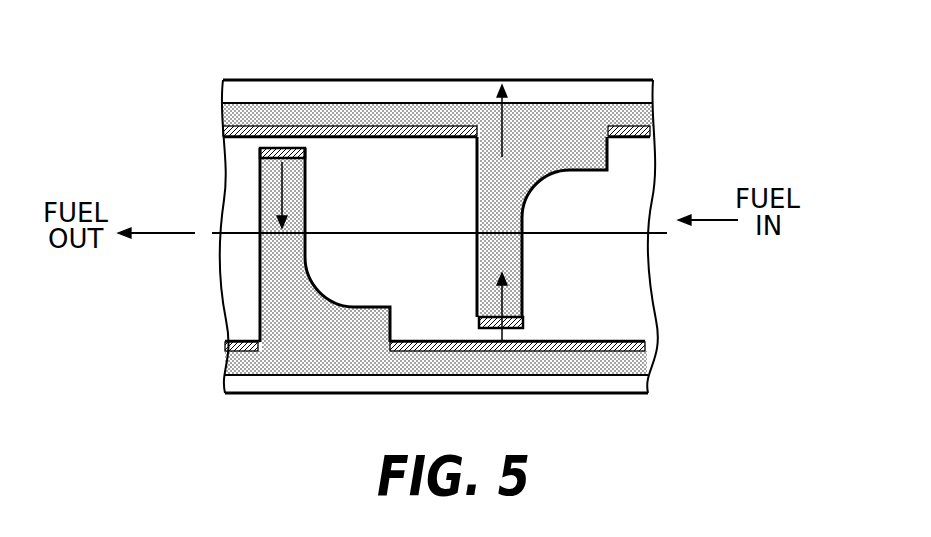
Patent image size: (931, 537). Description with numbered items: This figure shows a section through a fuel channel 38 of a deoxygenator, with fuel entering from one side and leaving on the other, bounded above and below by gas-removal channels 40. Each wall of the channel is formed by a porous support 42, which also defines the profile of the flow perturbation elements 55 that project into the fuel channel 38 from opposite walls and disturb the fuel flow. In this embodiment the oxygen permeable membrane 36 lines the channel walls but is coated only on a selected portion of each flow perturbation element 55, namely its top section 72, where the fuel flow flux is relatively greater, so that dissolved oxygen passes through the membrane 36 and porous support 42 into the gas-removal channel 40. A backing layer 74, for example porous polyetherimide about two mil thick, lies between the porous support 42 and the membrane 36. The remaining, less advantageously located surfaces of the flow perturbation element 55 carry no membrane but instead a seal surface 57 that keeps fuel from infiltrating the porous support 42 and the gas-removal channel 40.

The oxygen permeable membrane 36 is at (421, 137).
The fuel channel 38 is at (620, 232).
The gas-removal channel 40 is at (655, 88).
The porous support 42 is at (652, 115).
The flow perturbation element 55 is at (565, 153).
The seal surface 57 is at (476, 170).
The top section 72 is at (259, 155).
The backing layer 74 is at (262, 148).